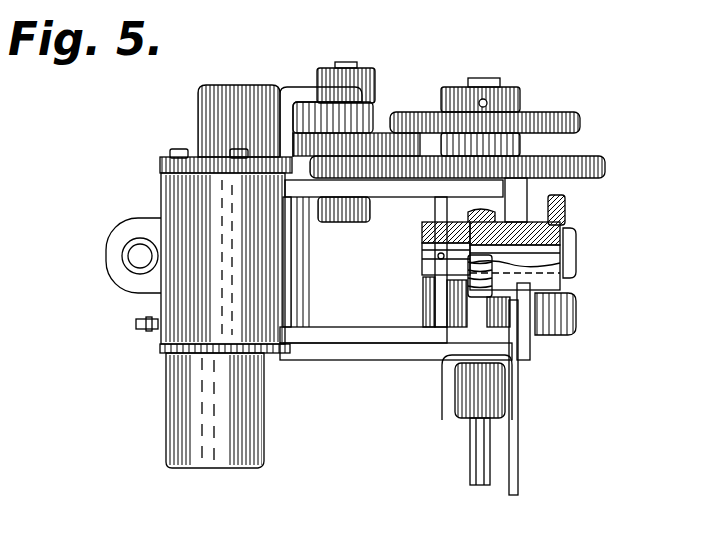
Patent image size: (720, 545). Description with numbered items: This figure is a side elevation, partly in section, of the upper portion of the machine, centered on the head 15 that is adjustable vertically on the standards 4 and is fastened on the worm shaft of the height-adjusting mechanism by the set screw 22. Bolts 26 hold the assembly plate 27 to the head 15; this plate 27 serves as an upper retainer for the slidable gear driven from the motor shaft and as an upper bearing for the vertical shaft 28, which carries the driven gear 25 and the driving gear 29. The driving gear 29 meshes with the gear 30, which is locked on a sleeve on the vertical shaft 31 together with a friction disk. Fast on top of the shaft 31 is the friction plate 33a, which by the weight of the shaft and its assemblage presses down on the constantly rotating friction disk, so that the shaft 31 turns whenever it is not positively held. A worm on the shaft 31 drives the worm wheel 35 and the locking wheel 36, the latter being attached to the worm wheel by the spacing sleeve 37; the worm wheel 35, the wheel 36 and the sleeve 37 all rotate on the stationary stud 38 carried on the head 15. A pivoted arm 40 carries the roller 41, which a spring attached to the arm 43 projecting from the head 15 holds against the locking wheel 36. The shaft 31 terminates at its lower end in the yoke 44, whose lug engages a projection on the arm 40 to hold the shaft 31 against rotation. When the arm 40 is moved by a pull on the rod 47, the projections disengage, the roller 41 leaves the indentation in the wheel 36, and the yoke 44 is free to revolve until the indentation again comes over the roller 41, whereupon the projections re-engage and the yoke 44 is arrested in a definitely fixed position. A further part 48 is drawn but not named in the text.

The standard 4 is at (262, 420).
The head 15 is at (355, 328).
The set screw 22 is at (138, 330).
The driven gear 25 is at (295, 140).
The bolts 26 is at (178, 149).
The assembly plate 27 is at (248, 97).
The vertical shaft 28 is at (353, 67).
The driving gear 29 is at (310, 180).
The gear 30 is at (605, 172).
The vertical shaft 31 is at (497, 80).
The friction plate 33a is at (562, 113).
The worm wheel 35 is at (478, 296).
The locking wheel 36 is at (567, 204).
The spacing sleeve 37 is at (567, 226).
The stationary stud 38 is at (567, 257).
The arm 40 is at (537, 345).
The roller 41 is at (563, 312).
The arm 43 is at (540, 172).
The yoke 44 is at (457, 387).
The rod 47 is at (516, 448).
The rod 48 is at (481, 462).